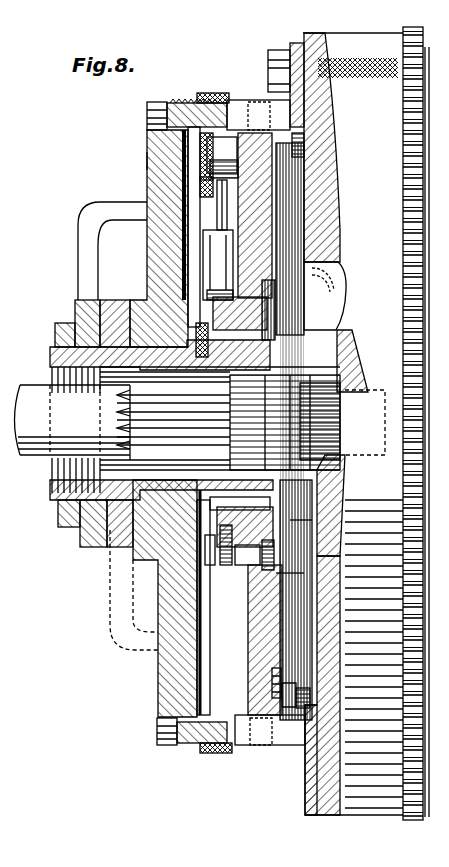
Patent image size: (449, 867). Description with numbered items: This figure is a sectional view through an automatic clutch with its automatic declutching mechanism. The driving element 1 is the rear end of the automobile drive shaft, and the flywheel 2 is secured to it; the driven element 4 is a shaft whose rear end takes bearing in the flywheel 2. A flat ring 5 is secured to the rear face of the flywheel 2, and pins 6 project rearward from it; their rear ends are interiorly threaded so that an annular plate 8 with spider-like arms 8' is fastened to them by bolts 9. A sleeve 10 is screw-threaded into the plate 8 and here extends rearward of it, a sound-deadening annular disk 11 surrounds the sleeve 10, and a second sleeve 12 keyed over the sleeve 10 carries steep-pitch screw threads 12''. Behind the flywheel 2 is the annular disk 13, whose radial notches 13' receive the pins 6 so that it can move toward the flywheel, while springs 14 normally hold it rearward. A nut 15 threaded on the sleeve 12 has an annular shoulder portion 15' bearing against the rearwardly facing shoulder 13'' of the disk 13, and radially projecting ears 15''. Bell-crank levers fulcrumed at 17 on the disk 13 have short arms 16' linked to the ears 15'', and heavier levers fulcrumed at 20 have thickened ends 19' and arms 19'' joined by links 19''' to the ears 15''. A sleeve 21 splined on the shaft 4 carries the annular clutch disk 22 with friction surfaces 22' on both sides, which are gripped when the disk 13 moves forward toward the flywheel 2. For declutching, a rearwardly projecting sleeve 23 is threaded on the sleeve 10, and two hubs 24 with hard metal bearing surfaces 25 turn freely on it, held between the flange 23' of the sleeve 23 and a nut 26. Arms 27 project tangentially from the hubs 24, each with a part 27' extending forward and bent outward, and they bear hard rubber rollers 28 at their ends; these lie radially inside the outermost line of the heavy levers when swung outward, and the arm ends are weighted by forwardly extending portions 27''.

The driving element 1 is at (403, 363).
The flywheel 2 is at (292, 812).
The driven element 4 is at (27, 400).
The flat ring 5 is at (290, 44).
The pins 6 is at (273, 107).
The annular plate 8 is at (165, 423).
The spider-like arms 8' is at (140, 383).
The screw-threaded bolts 9 is at (152, 104).
The sleeve 10 is at (115, 478).
The annular disk 11 is at (192, 335).
The second sleeve 12 is at (285, 422).
The screw threads 12'' is at (169, 371).
The annular disk 13 is at (328, 431).
The radial notches 13' is at (255, 414).
The rearwardly facing shoulder 13'' is at (331, 560).
The springs 14 is at (302, 137).
The nut 15 is at (295, 322).
The annular disk-like shoulder portion 15' is at (246, 236).
The radially projecting ears 15'' is at (243, 611).
The short arm 16' is at (232, 567).
The fulcrums 17 is at (223, 570).
The thickened ends 19' is at (162, 170).
The arm 19'' is at (168, 203).
The link 19''' is at (172, 265).
The fulcrums 20 is at (210, 168).
The sleeve 21 is at (312, 472).
The annular clutch disk 22 is at (334, 303).
The friction surfaces 22' is at (322, 526).
The rearwardly projecting sleeve 23 is at (146, 452).
The flange 23' is at (123, 590).
The hubs 24 is at (117, 312).
The hard metal bearing surface 25 is at (78, 318).
The nut 26 is at (68, 337).
The arms 27 is at (107, 439).
The forwardly extending part 27' is at (121, 415).
The forwardly extending weighted portions 27'' is at (243, 674).
The rollers 28 is at (218, 89).